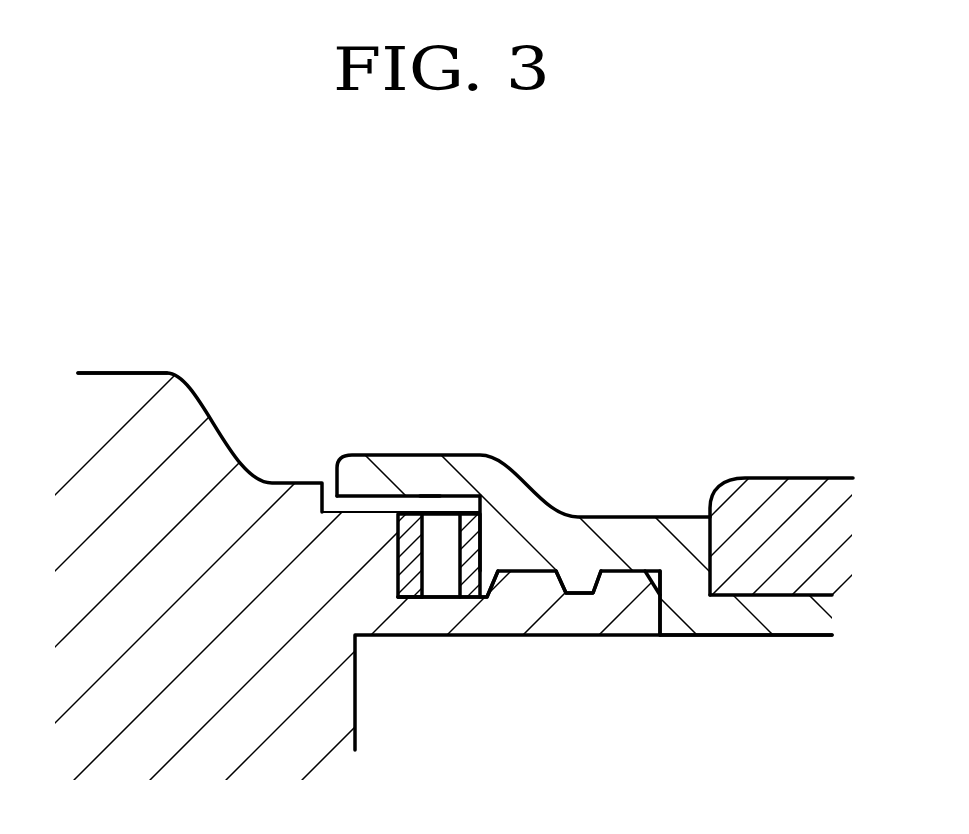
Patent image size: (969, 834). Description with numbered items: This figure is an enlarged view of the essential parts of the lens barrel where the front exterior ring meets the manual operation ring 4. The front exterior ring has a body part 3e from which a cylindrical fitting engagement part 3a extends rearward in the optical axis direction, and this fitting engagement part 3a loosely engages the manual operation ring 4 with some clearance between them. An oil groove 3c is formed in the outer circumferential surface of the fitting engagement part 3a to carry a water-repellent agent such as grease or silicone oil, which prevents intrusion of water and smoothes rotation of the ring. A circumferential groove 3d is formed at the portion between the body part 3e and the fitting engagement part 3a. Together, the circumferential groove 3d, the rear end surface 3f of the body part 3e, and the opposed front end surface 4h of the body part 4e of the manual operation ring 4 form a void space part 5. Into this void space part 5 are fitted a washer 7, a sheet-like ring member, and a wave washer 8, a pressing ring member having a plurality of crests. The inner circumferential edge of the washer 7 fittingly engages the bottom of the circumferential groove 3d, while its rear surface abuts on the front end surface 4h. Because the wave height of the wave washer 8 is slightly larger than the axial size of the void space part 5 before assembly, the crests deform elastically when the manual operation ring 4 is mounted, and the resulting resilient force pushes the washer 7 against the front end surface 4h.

The fitting engagement part 3a is at (540, 623).
The oil groove 3c is at (580, 580).
The circumferential groove 3d is at (500, 570).
The body part 3e is at (93, 400).
The rear end surface 3f is at (398, 546).
The manual operation ring 4 is at (449, 456).
The body part 4e is at (742, 617).
The front end surface 4h is at (484, 537).
The void space part 5 is at (430, 494).
The washer 7 is at (469, 528).
The wave washer 8 is at (412, 598).